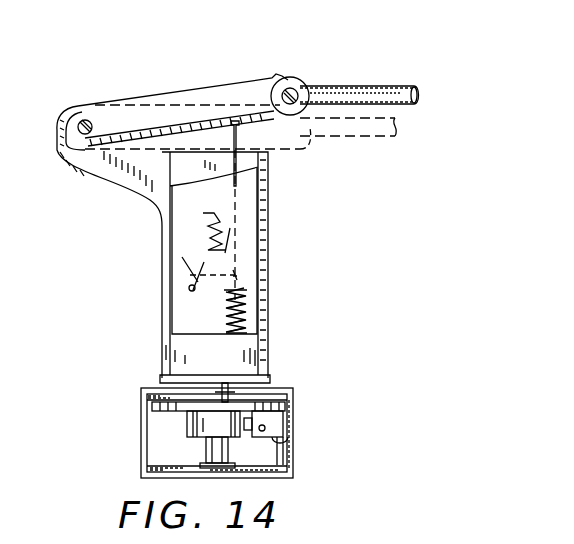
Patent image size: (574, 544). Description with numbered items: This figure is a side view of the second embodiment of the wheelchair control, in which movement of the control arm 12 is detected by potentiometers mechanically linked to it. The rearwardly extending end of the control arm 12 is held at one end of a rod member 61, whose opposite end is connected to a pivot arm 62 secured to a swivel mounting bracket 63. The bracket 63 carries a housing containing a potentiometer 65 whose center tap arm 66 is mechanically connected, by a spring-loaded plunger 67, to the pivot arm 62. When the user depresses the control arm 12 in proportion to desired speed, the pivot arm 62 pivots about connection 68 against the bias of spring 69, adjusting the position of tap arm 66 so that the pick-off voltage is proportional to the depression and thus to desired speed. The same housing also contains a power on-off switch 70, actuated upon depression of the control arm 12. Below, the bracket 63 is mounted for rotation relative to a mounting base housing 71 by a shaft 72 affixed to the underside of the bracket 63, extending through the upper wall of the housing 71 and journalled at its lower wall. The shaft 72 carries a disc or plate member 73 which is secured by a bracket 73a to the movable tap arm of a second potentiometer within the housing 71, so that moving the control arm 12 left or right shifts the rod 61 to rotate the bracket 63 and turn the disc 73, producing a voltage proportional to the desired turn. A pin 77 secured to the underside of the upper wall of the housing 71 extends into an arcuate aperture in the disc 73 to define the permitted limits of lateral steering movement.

The control arm 12 is at (356, 88).
The rod member 61 is at (296, 86).
The pivot arm 62 is at (184, 85).
The swivel mounting bracket 63 is at (106, 168).
The potentiometer 65 is at (211, 214).
The center tap arm 66 is at (204, 276).
The spring-loaded plunger 67 is at (240, 134).
The connection 68 is at (88, 119).
The spring 69 is at (226, 306).
The power on-off switch 70 is at (208, 244).
The mounting base housing 71 is at (282, 390).
The shaft 72 is at (206, 446).
The disc or plate member 73 is at (172, 407).
The bracket 73a is at (344, 436).
The pin 77 is at (222, 398).